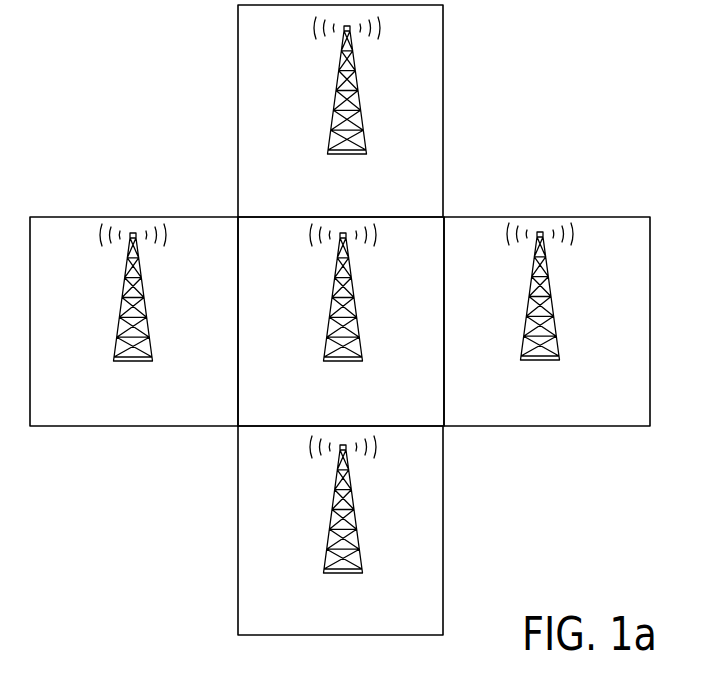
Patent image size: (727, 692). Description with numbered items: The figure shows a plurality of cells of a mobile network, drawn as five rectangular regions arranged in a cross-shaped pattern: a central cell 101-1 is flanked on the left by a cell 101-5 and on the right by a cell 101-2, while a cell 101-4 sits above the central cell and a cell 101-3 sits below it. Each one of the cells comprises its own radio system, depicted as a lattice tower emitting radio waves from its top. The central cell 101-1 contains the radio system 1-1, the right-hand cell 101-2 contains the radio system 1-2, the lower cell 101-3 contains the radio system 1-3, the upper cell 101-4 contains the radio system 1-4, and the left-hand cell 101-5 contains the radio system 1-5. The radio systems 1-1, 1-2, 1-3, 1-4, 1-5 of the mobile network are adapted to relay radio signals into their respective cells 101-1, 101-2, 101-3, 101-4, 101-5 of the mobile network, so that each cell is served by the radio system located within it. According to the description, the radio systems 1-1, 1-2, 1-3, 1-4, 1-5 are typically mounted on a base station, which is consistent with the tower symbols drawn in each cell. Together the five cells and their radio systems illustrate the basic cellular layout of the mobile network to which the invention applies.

The radio system 1-1 is at (333, 303).
The radio system 1-2 is at (531, 303).
The radio system 1-3 is at (334, 501).
The radio system 1-4 is at (338, 103).
The radio system 1-5 is at (124, 303).
The cell 101-1 is at (309, 419).
The cell 101-2 is at (518, 419).
The cell 101-3 is at (309, 627).
The cell 101-4 is at (310, 207).
The cell 101-5 is at (112, 418).